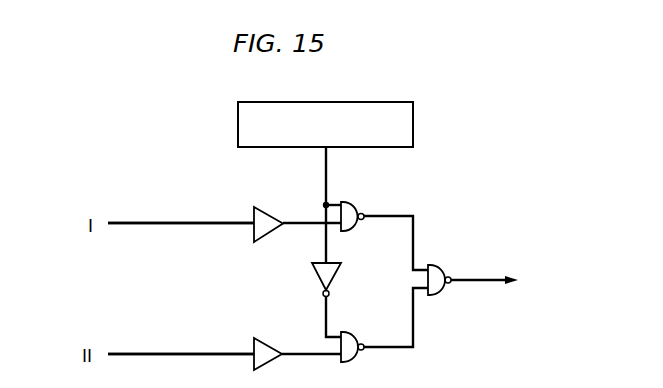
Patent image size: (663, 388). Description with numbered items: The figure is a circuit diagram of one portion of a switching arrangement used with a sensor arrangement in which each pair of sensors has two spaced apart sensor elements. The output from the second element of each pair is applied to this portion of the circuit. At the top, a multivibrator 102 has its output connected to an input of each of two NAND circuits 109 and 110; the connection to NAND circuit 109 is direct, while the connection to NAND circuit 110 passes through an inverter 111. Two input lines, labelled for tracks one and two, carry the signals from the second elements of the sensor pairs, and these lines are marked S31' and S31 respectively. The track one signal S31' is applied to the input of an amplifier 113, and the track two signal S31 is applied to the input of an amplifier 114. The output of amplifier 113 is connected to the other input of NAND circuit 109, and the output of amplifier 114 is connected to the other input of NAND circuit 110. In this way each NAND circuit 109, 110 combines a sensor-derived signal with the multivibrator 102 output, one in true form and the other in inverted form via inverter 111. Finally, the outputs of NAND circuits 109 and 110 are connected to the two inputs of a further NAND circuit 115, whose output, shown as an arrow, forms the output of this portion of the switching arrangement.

The multivibrator 102 is at (238, 133).
The NAND circuit 109 is at (358, 205).
The NAND circuit 110 is at (352, 336).
The inverter 111 is at (318, 300).
The amplifier 113 is at (268, 212).
The amplifier 114 is at (267, 344).
The NAND circuit 115 is at (473, 269).
The signal S31 is at (181, 333).
The signal S31' is at (181, 251).